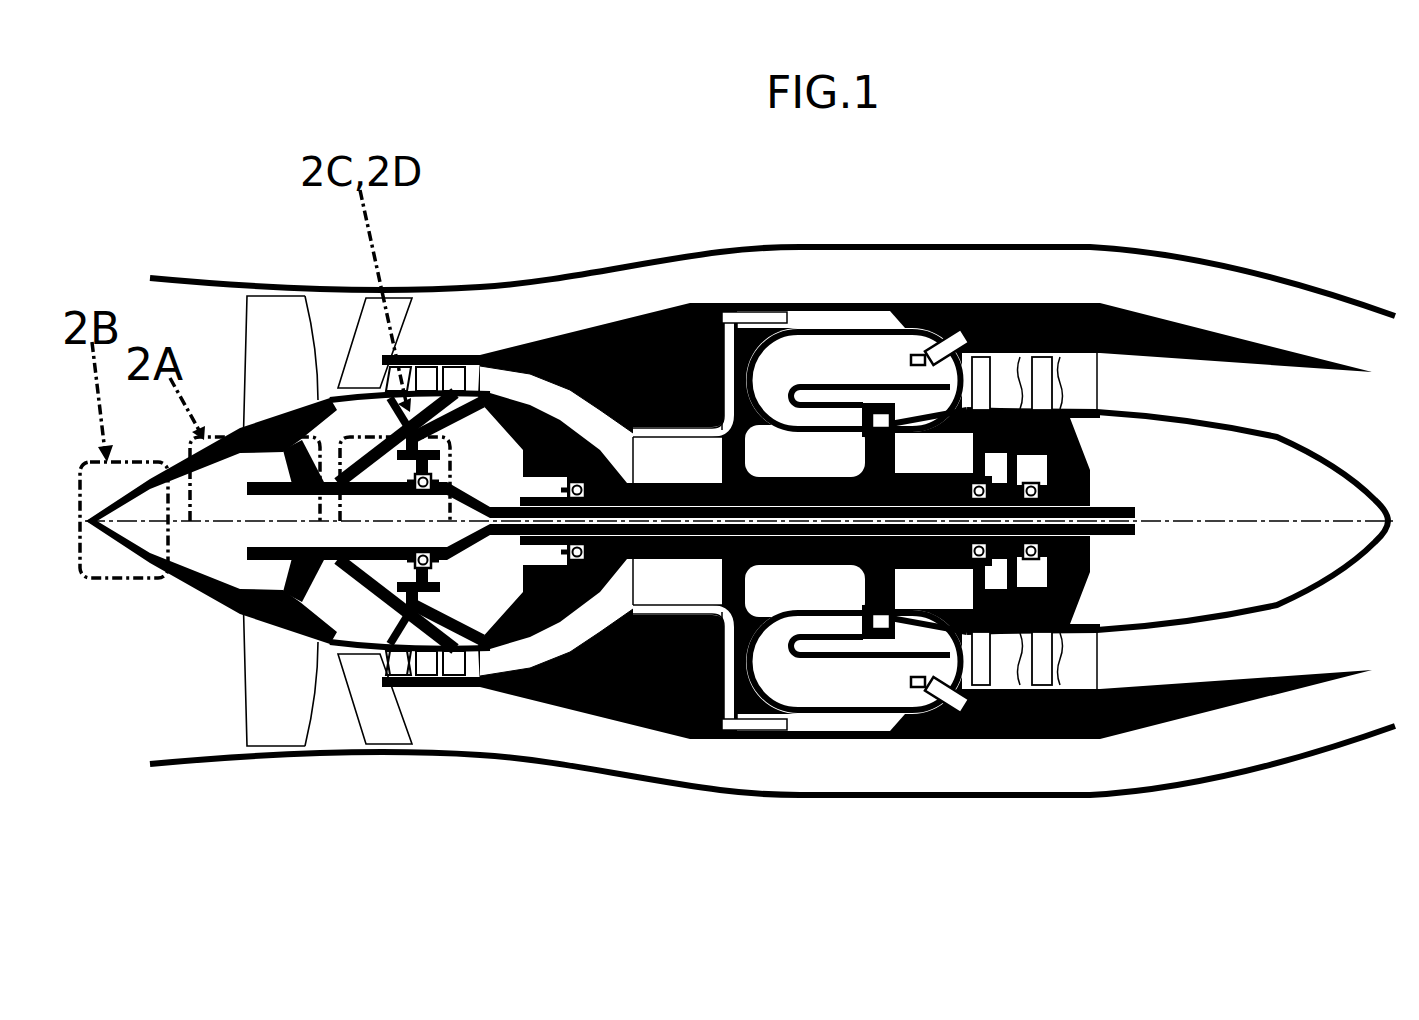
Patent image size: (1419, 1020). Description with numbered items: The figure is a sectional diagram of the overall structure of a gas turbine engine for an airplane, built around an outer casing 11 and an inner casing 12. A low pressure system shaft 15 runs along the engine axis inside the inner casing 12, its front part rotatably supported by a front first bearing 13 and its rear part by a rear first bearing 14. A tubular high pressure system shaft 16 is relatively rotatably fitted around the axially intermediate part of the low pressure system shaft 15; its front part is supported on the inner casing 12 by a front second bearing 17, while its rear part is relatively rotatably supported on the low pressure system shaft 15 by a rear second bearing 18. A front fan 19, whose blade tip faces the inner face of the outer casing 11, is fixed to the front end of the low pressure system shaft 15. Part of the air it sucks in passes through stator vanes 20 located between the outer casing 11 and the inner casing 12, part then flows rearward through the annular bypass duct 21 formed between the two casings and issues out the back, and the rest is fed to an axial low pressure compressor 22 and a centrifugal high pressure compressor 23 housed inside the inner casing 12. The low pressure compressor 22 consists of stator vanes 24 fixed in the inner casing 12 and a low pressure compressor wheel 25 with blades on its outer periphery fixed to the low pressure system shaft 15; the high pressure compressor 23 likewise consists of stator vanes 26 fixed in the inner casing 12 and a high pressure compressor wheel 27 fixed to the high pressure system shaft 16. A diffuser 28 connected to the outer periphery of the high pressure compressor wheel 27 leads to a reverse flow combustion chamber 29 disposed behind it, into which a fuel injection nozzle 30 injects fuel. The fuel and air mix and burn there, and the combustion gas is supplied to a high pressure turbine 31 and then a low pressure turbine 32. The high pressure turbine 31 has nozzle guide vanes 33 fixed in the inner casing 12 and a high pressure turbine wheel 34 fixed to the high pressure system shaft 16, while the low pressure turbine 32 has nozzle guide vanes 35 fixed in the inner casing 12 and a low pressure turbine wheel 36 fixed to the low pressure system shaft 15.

The outer casing 11 is at (478, 290).
The inner casing 12 is at (593, 340).
The front first bearing 13 is at (434, 480).
The rear first bearing 14 is at (1035, 492).
The low pressure system shaft 15 is at (768, 512).
The high pressure system shaft 16 is at (805, 496).
The front second bearing 17 is at (578, 490).
The rear second bearing 18 is at (980, 490).
The front fan 19 is at (240, 355).
The stator vanes 20 is at (372, 358).
The annular bypass duct 21 is at (869, 301).
The axial low pressure compressor 22 is at (459, 347).
The centrifugal high pressure compressor 23 is at (652, 430).
The stator vanes 24 is at (455, 367).
The low pressure compressor wheel 25 is at (403, 660).
The stator vanes 26 is at (562, 404).
The high pressure compressor wheel 27 is at (727, 465).
The diffuser 28 is at (760, 313).
The reverse flow combustion chamber 29 is at (856, 372).
The fuel injection nozzle 30 is at (940, 340).
The high pressure turbine 31 is at (873, 402).
The low pressure turbine 32 is at (1060, 348).
The nozzle guide vanes 33 is at (838, 422).
The high pressure turbine wheel 34 is at (878, 460).
The nozzle guide vanes 35 is at (1012, 370).
The low pressure turbine wheel 36 is at (1045, 415).